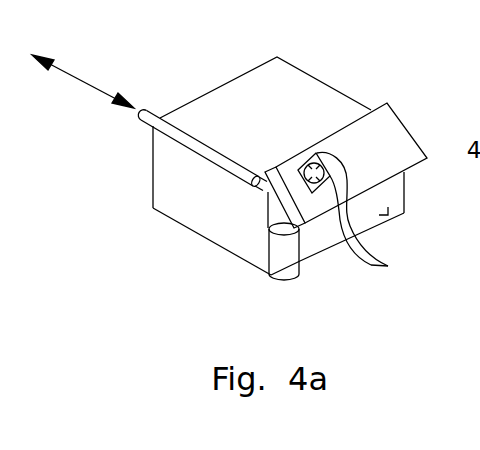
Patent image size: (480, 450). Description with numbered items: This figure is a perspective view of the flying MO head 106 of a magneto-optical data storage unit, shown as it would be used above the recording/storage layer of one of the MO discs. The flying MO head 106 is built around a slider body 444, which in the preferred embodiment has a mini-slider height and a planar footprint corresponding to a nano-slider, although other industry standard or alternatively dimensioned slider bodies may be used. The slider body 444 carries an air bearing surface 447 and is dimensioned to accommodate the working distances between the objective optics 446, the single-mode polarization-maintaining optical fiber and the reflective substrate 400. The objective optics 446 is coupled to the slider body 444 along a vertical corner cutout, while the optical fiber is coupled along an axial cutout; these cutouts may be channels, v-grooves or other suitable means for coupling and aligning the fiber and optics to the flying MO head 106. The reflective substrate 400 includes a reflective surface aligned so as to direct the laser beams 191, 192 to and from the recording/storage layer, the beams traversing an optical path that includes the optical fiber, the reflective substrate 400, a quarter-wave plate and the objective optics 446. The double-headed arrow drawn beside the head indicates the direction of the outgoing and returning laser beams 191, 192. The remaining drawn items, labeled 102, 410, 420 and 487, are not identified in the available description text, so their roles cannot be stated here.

The housing 102 is at (265, 66).
The flying MO head 106 is at (290, 125).
The outgoing laser beam 191 is at (75, 83).
The laser beam 192 is at (120, 79).
The reflective substrate 400 is at (401, 117).
The cam arm 410 is at (372, 264).
The lever 420 is at (282, 200).
The slider body 444 is at (182, 182).
The objective optics 446 is at (277, 256).
The air bearing surface 447 is at (373, 221).
The base edge 487 is at (320, 254).